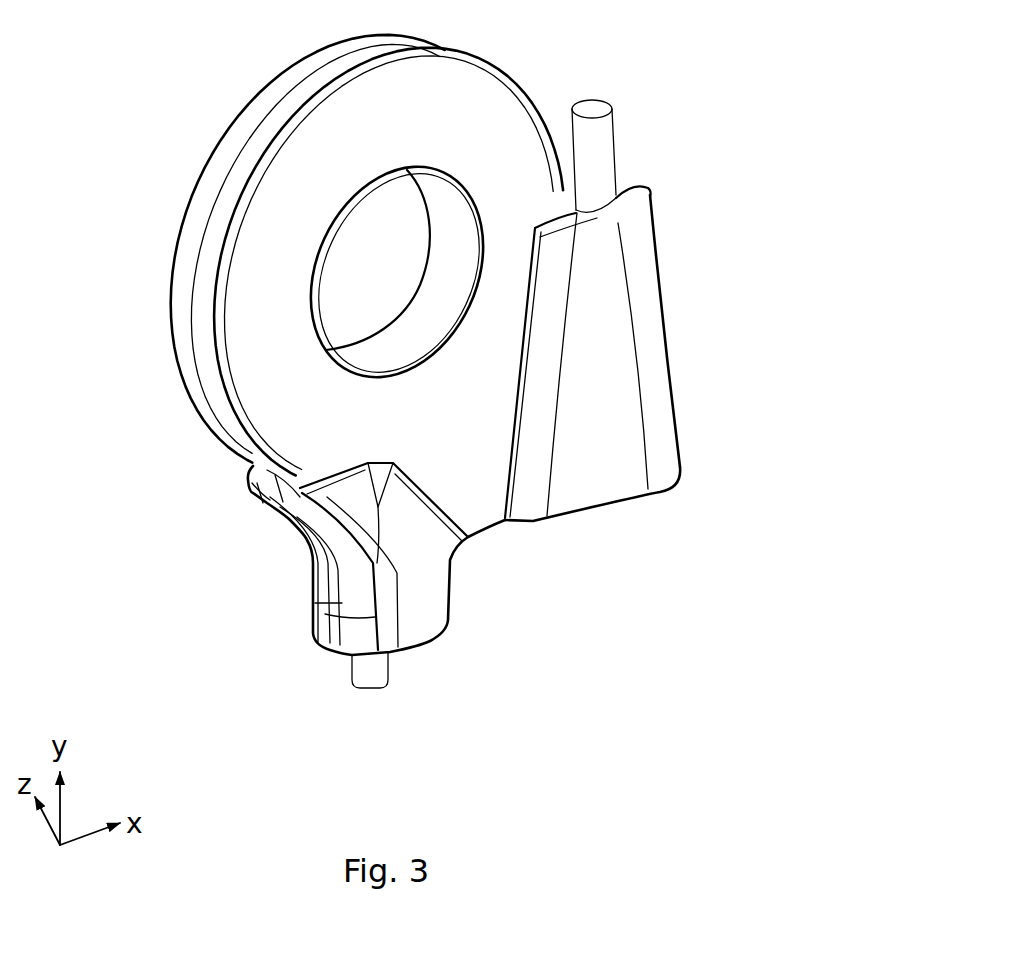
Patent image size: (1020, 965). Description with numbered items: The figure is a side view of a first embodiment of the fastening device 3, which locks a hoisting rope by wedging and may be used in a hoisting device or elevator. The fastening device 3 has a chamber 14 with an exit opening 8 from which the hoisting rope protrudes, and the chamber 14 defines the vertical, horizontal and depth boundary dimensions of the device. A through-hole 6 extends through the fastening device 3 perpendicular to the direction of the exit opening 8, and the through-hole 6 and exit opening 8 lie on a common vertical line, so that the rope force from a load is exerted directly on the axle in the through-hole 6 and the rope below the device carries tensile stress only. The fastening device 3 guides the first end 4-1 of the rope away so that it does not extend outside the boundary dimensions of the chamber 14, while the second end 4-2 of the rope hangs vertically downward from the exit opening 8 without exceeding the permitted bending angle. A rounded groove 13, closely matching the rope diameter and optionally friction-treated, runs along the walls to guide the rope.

The fastening device 3 is at (490, 393).
The groove 13 is at (252, 150).
The through-hole 6 is at (397, 271).
The first end of the hoisting rope 4-1 is at (610, 110).
The chamber 14 is at (420, 577).
The exit opening 8 is at (347, 657).
The second end of the hoisting rope 4-2 is at (390, 686).